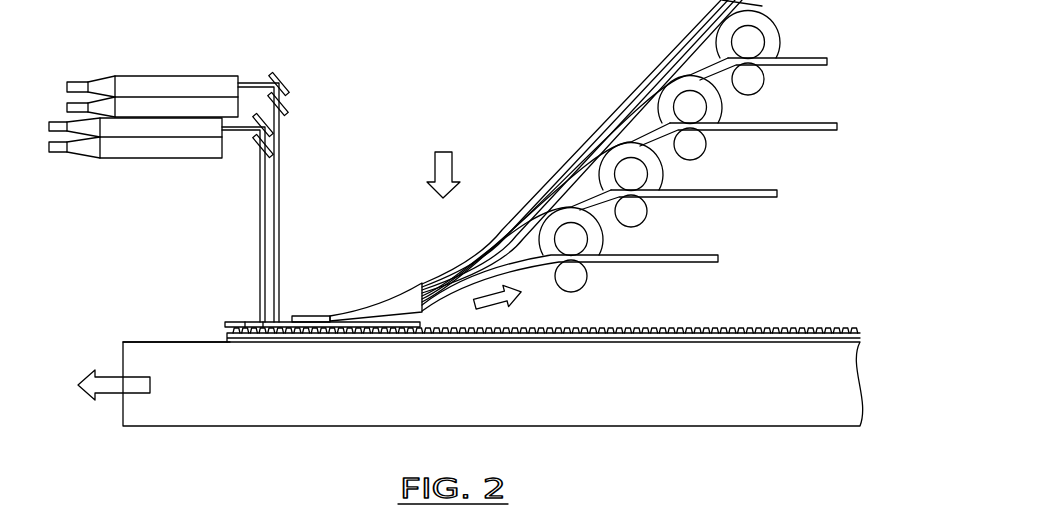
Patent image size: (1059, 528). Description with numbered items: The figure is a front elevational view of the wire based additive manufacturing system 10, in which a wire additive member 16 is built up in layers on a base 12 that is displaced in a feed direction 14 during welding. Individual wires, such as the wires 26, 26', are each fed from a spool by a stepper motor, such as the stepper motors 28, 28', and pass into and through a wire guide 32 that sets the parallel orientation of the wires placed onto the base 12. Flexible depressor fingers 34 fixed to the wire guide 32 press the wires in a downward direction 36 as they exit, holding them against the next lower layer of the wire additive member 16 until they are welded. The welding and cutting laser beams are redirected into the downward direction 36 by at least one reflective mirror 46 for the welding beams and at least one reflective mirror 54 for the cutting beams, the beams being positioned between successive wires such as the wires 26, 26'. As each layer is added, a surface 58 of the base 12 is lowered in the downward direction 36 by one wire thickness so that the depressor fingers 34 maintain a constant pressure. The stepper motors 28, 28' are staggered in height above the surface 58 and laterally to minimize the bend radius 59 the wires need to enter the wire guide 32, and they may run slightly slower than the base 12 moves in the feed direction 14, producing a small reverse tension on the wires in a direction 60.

The wire based additive manufacturing system 10 is at (515, 62).
The base 12 is at (173, 412).
The feed direction 14 is at (110, 395).
The wire additive member 16 is at (217, 330).
The wire 26 is at (570, 284).
The wire 26' is at (678, 219).
The stepper motor 28 is at (614, 232).
The stepper motor 28' is at (674, 167).
The wire guide 32 is at (407, 303).
The flexible depressor fingers 34 is at (307, 317).
The downward direction 36 is at (443, 161).
The reflective mirror 46 is at (260, 212).
The reflective mirror 54 is at (281, 213).
The surface 58 is at (140, 342).
The bend radius 59 is at (529, 265).
The direction 60 is at (488, 302).